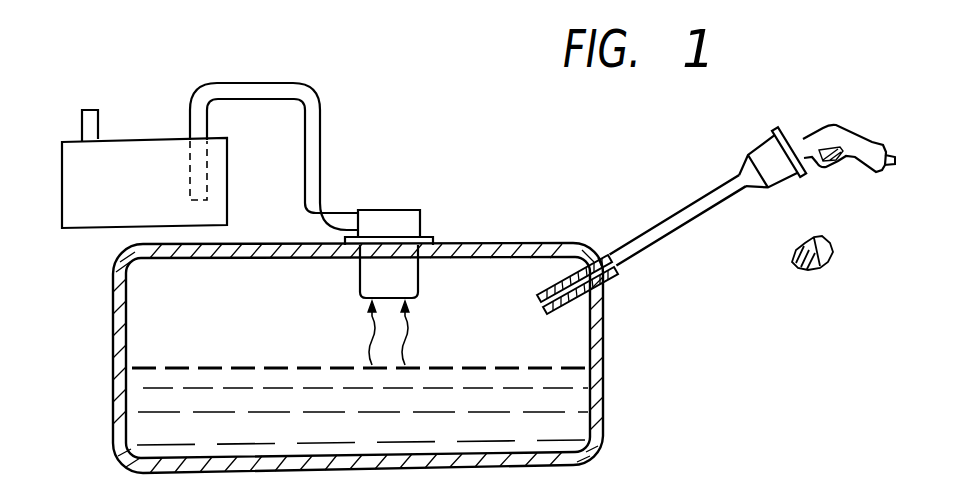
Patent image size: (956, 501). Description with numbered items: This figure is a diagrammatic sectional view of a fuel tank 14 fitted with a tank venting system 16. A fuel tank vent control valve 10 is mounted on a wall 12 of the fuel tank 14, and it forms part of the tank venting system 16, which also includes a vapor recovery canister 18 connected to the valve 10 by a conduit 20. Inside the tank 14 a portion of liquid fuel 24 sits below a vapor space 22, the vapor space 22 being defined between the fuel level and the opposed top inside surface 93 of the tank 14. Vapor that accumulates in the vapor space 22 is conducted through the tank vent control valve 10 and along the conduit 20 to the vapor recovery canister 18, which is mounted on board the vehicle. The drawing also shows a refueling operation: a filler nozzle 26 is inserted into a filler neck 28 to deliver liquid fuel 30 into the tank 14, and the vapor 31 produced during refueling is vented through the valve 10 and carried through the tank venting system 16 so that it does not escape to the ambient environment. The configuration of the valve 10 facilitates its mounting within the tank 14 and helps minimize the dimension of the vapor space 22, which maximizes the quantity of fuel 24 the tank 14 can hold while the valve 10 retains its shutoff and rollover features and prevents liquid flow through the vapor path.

The fuel tank vent control valve 10 is at (430, 198).
The wall 12 is at (518, 242).
The fuel tank 14 is at (615, 382).
The tank venting system 16 is at (361, 85).
The vapor recovery canister 18 is at (62, 185).
The conduit 20 is at (258, 83).
The vapor space 22 is at (137, 322).
The liquid fuel 24 is at (133, 411).
The filler nozzle 26 is at (812, 132).
The filler neck 28 is at (683, 213).
The liquid fuel 30 is at (522, 338).
The vapor 31 is at (370, 347).
The top inside surface 93 is at (283, 258).